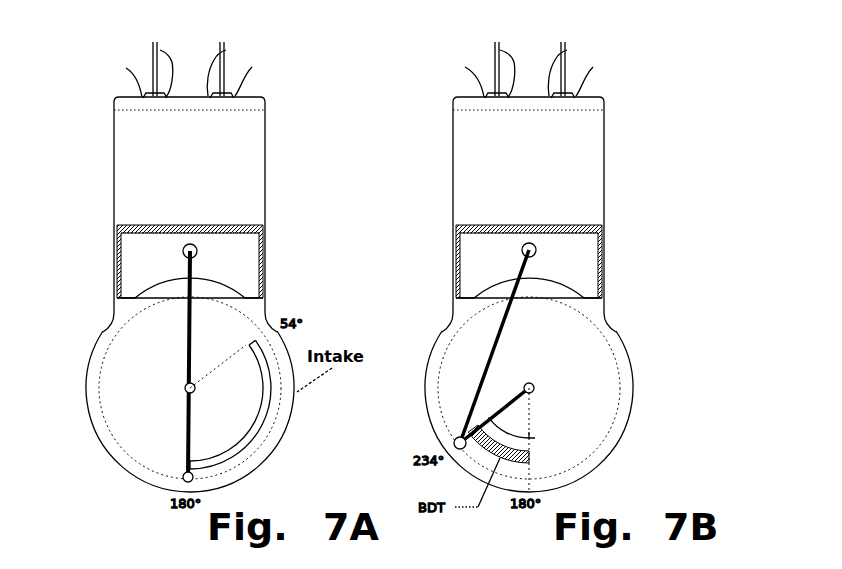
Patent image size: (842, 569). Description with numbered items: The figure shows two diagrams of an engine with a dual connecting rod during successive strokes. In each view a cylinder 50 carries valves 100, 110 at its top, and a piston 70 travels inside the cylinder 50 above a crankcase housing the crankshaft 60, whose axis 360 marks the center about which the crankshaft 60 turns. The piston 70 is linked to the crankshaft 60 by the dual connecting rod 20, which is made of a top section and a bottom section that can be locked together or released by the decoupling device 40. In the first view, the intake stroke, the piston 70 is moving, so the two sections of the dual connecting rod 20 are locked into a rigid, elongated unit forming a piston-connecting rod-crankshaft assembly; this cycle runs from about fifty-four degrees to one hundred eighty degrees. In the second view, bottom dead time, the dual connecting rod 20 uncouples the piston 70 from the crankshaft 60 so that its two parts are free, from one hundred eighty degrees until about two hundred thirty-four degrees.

In FIG. 7A, the dual connecting rod 20 is at (186, 337).
In FIG. 7B, the dual connecting rod 20 is at (497, 337).
In FIG. 7B, the decoupling device 40 is at (512, 430).
In FIG. 7A, the cylinder 50 is at (140, 158).
In FIG. 7A, the crankshaft 60 is at (186, 425).
In FIG. 7B, the crankshaft 60 is at (456, 437).
In FIG. 7A, the piston 70 is at (137, 265).
In FIG. 7A, the valve 100 is at (152, 93).
In FIG. 7A, the valve 110 is at (227, 90).
In FIG. 7A, the axis of the crankshaft 360 is at (186, 386).